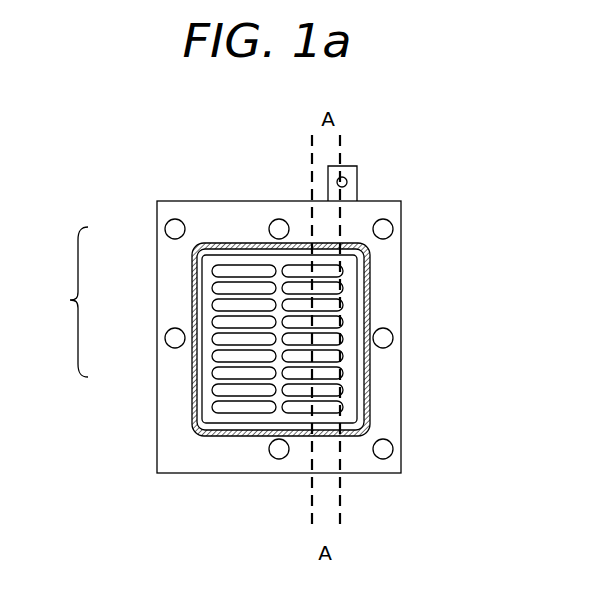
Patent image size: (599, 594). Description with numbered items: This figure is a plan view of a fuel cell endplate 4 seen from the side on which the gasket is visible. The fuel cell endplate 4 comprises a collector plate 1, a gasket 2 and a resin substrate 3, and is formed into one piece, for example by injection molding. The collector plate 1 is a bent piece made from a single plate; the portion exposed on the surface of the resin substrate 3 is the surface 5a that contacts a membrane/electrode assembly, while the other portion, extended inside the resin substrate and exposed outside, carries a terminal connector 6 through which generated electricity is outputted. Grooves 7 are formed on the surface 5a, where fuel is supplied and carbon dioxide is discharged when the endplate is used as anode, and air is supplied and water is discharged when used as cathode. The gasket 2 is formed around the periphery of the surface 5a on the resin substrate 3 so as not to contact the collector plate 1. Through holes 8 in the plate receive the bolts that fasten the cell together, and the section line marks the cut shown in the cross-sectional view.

The collector plate 1 is at (205, 262).
The gasket 2 is at (190, 310).
The resin substrate 3 is at (170, 383).
The fuel cell endplate 4 is at (66, 302).
The surface contacting a membrane/electrode assembly 5a is at (272, 415).
The terminal connector 6 is at (345, 182).
The grooves 7 is at (238, 407).
The through holes 8 is at (384, 451).